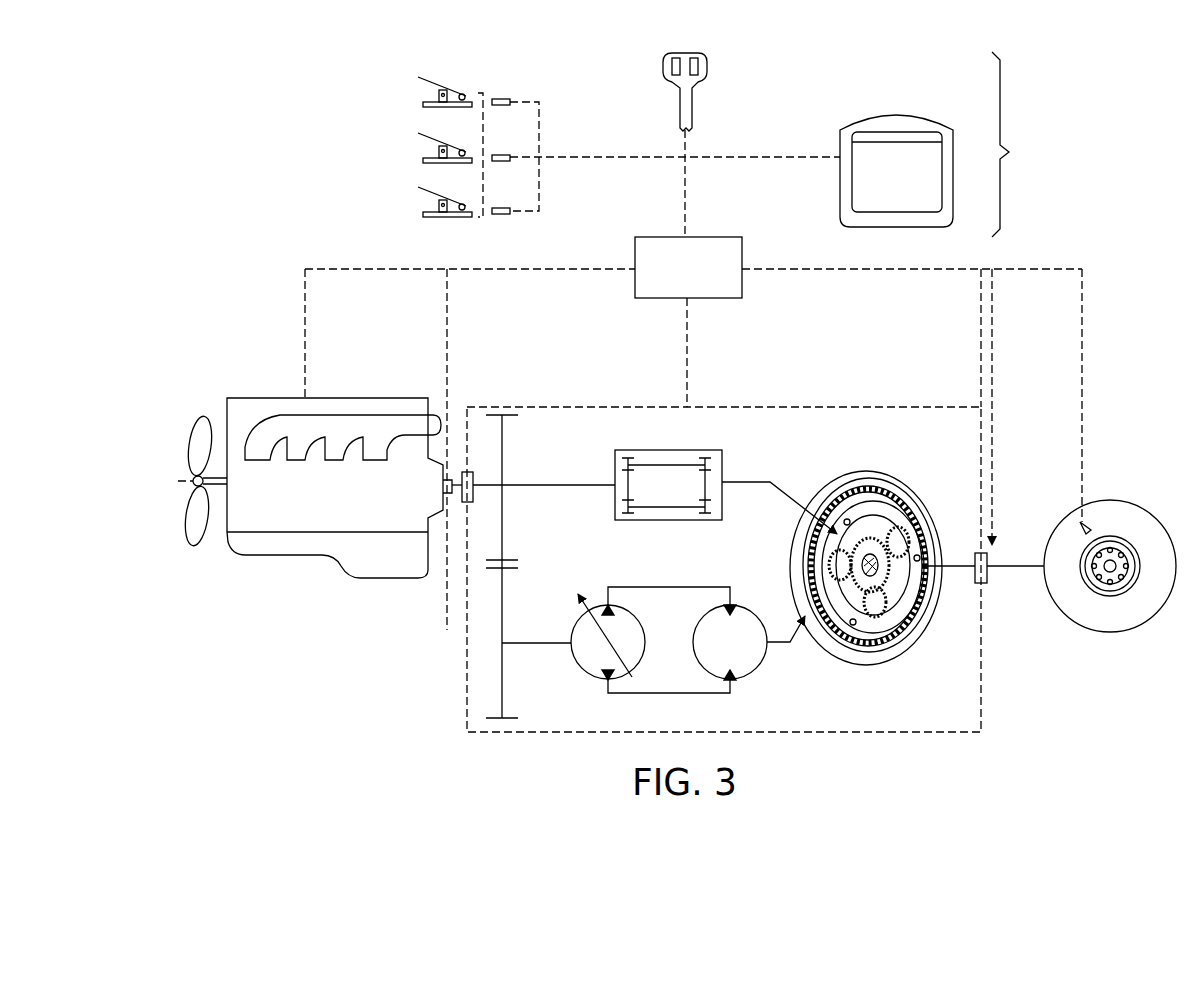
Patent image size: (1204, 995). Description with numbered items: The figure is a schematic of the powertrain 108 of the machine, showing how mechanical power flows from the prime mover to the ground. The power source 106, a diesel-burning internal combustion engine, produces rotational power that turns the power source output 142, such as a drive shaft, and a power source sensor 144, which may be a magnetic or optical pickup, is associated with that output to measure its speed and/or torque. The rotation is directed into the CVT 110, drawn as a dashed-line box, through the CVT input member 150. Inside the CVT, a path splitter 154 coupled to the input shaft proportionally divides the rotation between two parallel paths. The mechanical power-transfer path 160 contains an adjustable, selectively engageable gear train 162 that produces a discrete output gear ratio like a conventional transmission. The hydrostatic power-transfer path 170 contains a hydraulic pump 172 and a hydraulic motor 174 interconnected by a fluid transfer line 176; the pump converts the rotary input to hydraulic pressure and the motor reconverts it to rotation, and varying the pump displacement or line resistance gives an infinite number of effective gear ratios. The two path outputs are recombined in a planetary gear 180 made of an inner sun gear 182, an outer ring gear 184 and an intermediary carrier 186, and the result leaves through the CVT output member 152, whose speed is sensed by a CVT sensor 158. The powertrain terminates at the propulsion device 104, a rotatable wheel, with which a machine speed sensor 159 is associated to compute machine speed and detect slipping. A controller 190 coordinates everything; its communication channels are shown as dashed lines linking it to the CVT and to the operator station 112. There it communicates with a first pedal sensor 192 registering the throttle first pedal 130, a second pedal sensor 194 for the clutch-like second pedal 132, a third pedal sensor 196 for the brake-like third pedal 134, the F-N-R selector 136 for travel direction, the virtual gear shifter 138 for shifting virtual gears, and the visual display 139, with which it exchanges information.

The propulsion device 104 is at (1110, 597).
The power source 106 is at (310, 449).
The powertrain 108 is at (556, 338).
The CVT 110 is at (724, 529).
The operator station 112 is at (1029, 144).
The first pedal 130 is at (414, 88).
The second pedal 132 is at (416, 143).
The third pedal 134 is at (416, 196).
The F-N-R selector 136 is at (652, 84).
The virtual gear shifter 138 is at (728, 56).
The visual display 139 is at (904, 147).
The power source output 142 is at (434, 551).
The power source sensor 144 is at (468, 413).
The CVT input member 150 is at (510, 503).
The CVT output member 152 is at (984, 614).
The path splitter 154 is at (544, 566).
The CVT sensor 158 is at (1025, 410).
The machine speed sensor 159 is at (1114, 401).
The mechanical power-transfer path 160 is at (779, 473).
The gear train 162 is at (668, 467).
The hydrostatic power-transfer path 170 is at (689, 658).
The hydraulic pump 172 is at (616, 610).
The hydraulic motor 174 is at (725, 670).
The fluid transfer line 176 is at (675, 616).
The planetary gear 180 is at (879, 568).
The sun gear 182 is at (868, 511).
The ring gear 184 is at (874, 604).
The carrier 186 is at (895, 561).
The controller 190 is at (688, 267).
The first pedal sensor 192 is at (534, 134).
The second pedal sensor 194 is at (537, 132).
The third pedal sensor 196 is at (537, 189).